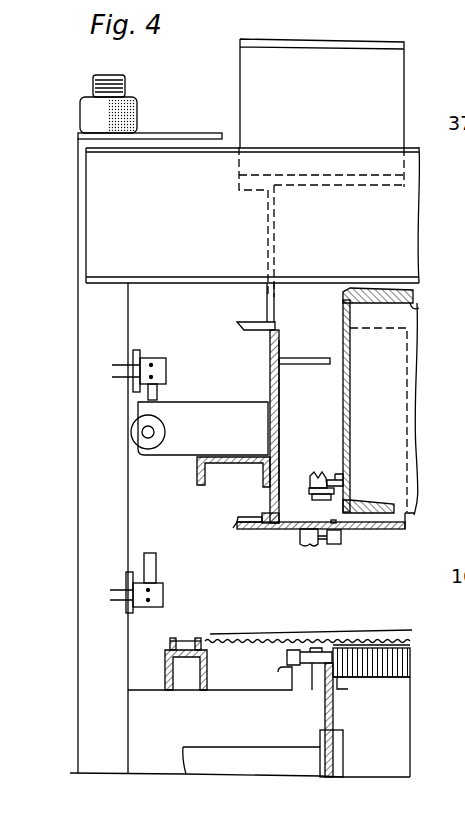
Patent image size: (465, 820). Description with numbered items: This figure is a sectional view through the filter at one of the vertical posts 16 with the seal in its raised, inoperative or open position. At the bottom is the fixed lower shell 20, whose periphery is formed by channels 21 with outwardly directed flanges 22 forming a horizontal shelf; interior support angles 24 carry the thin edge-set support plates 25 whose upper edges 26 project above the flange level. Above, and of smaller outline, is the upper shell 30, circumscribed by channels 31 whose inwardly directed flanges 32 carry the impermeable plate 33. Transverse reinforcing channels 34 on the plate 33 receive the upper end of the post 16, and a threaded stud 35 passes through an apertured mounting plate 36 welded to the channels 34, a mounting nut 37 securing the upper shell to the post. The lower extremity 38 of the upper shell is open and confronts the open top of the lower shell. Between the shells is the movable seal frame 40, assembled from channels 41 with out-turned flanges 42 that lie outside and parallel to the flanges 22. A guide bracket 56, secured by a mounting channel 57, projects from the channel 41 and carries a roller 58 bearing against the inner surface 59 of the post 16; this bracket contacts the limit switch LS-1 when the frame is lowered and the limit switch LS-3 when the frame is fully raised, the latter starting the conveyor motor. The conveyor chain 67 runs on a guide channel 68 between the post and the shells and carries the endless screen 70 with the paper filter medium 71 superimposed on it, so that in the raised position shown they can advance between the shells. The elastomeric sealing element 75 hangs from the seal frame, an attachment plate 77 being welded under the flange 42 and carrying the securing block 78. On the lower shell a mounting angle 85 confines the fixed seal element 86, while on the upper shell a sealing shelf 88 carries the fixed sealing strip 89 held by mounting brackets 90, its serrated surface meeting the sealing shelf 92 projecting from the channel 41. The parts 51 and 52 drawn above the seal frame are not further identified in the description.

The intermediate tubes 16 is at (78, 552).
The bottom fluid-conducting shell 20 is at (396, 773).
The peripheral channels 21 is at (333, 723).
The flanges 22 is at (210, 680).
The interior support angles 24 is at (343, 688).
The edge-set support plates 25 is at (383, 675).
The support edges 26 is at (408, 657).
The upper shell 30 is at (394, 392).
The channels 31 is at (350, 365).
The flanges 32 is at (391, 510).
The plate 33 is at (419, 308).
The reinforcing channels 34 is at (204, 205).
The threaded studs 35 is at (127, 88).
The apertured mounting plates 36 is at (198, 137).
The mounting nuts 37 is at (80, 118).
The lower extremity of upper shell 38 is at (407, 518).
The seal frame 40 is at (291, 443).
The channels 41 is at (279, 400).
The flanges 42 is at (256, 518).
The piston stem 51 is at (275, 305).
The cylinder head 52 is at (305, 90).
The guide brackets 56 is at (240, 403).
The mounting channel 57 is at (196, 468).
The roller 58 is at (160, 433).
The inner surface 59 is at (128, 513).
The endless chain 67 is at (170, 640).
The guide channels 68 is at (165, 663).
The endless screen 70 is at (417, 648).
The filter medium 71 is at (272, 639).
The sealing element 75 is at (309, 553).
The attachment plate 77 is at (273, 529).
The inner securing block 78 is at (345, 538).
The mounting angle 85 is at (287, 660).
The fixed seal element 86 is at (312, 667).
The peripheral sealing shelf 88 is at (308, 502).
The fixed elastomeric sealing strip 89 is at (318, 477).
The mounting brackets 90 is at (334, 475).
The sealing shelf 92 is at (312, 358).
The limit switch LS-3 is at (166, 368).
The limit switch LS-1 is at (163, 599).